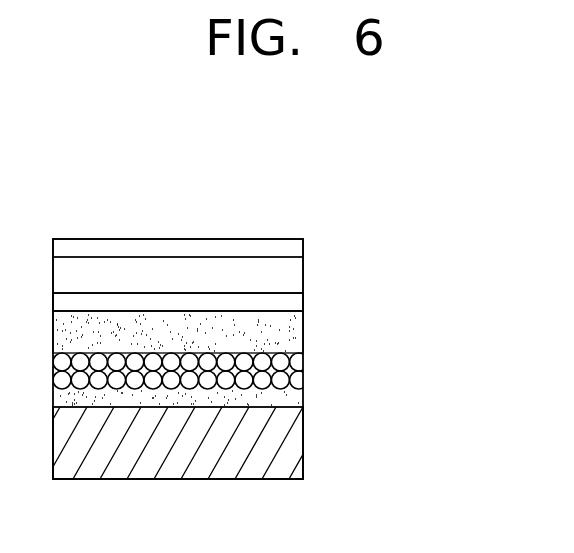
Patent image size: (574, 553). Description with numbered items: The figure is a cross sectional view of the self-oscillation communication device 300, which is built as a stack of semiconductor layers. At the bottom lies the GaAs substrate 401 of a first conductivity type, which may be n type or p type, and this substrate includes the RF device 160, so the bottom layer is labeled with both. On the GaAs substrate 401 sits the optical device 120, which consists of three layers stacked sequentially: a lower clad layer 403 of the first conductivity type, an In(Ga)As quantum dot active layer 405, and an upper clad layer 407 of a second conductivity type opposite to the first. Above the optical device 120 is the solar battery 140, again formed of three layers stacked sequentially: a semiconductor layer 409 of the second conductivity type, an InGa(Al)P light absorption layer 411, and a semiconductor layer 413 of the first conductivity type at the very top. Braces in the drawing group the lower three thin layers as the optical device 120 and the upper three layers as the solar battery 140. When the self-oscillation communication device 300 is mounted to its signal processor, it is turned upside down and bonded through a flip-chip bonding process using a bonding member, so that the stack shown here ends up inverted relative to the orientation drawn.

The self-oscillation communication device 300 is at (242, 182).
The semiconductor layer of the first conductivity type 413 is at (295, 251).
The InGa(Al)P light absorption layer 411 is at (295, 275).
The semiconductor layer of the second conductivity type 409 is at (297, 304).
The upper clad layer 407 is at (297, 334).
The In(Ga)As quantum dot active layer 405 is at (297, 363).
The lower clad layer 403 is at (297, 396).
The GaAs substrate 401 is at (291, 442).
The RF device 160 is at (240, 443).
The solar battery 140 is at (257, 274).
The optical device 120 is at (257, 359).